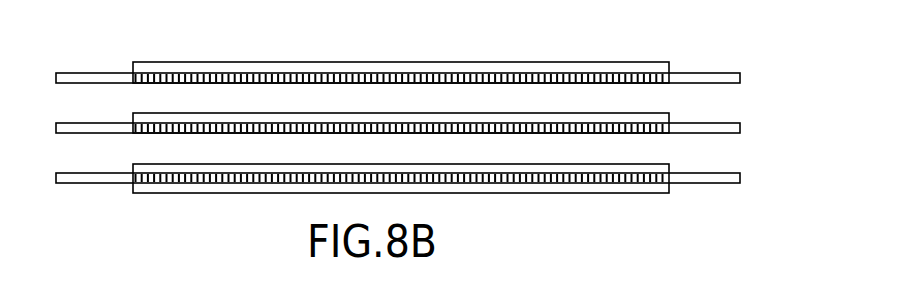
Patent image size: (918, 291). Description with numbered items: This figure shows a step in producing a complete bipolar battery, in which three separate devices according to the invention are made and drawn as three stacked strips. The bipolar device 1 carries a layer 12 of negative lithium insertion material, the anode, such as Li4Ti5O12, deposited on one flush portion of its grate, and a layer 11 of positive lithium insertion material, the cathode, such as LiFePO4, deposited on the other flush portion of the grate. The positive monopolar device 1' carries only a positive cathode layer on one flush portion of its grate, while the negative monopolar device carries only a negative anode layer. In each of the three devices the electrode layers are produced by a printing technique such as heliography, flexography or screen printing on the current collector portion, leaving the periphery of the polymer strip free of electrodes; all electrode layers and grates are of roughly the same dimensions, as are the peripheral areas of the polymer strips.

The bipolar device 1 is at (412, 200).
The positive monopolar device 1' is at (424, 117).
The layer of positive lithium insertion material 11 is at (401, 201).
The layer of negative lithium insertion material 12 is at (399, 202).